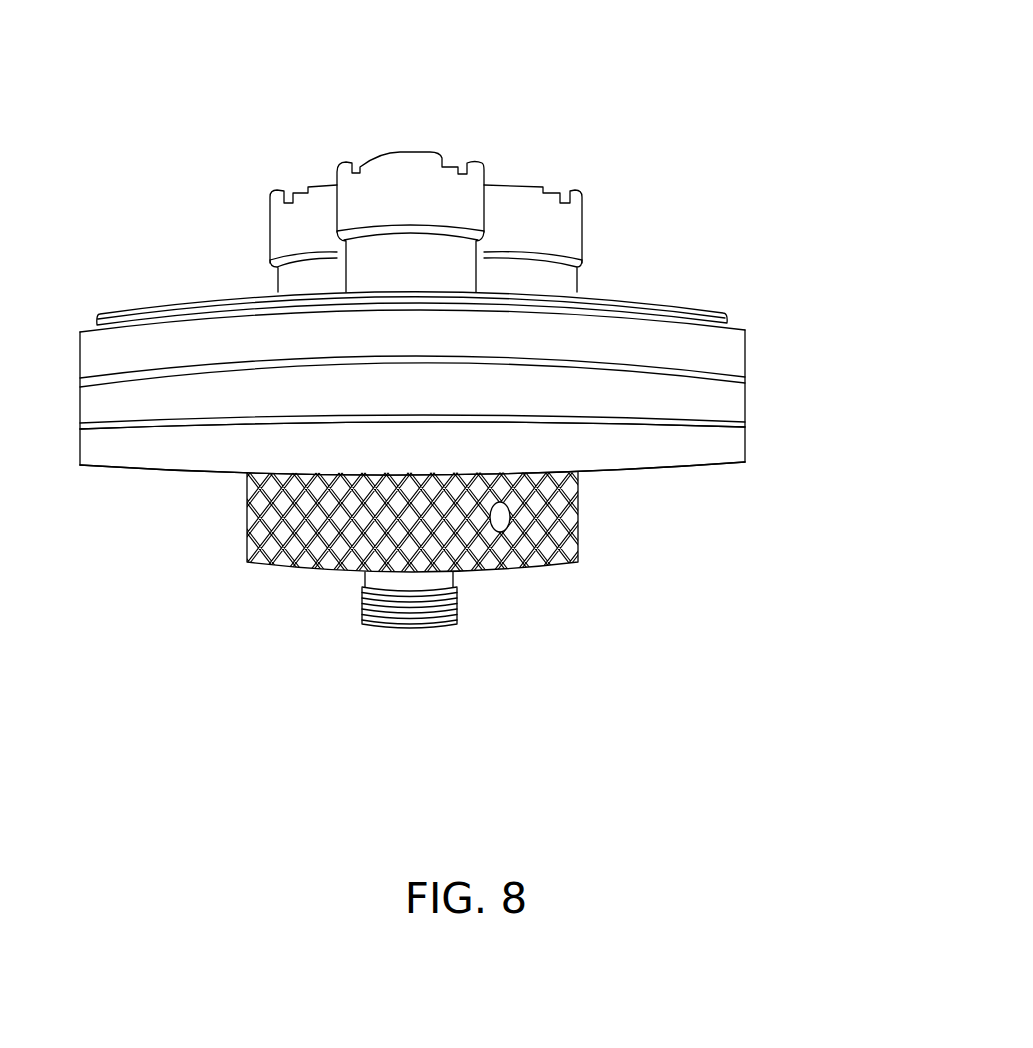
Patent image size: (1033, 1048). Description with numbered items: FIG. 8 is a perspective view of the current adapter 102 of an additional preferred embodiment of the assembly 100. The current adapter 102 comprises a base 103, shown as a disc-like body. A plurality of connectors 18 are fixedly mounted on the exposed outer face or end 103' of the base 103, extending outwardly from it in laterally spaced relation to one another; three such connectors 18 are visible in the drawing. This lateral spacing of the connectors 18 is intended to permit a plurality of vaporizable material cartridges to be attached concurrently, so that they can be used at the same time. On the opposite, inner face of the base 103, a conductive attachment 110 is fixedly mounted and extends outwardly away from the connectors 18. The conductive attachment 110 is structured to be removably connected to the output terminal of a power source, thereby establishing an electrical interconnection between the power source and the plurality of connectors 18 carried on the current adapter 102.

The connectors 18 is at (403, 180).
The assembly 100 is at (486, 408).
The current adapter 102 is at (486, 398).
The base 103 is at (491, 475).
The outer face or end 103' is at (382, 243).
The conductive attachment 110 is at (433, 605).